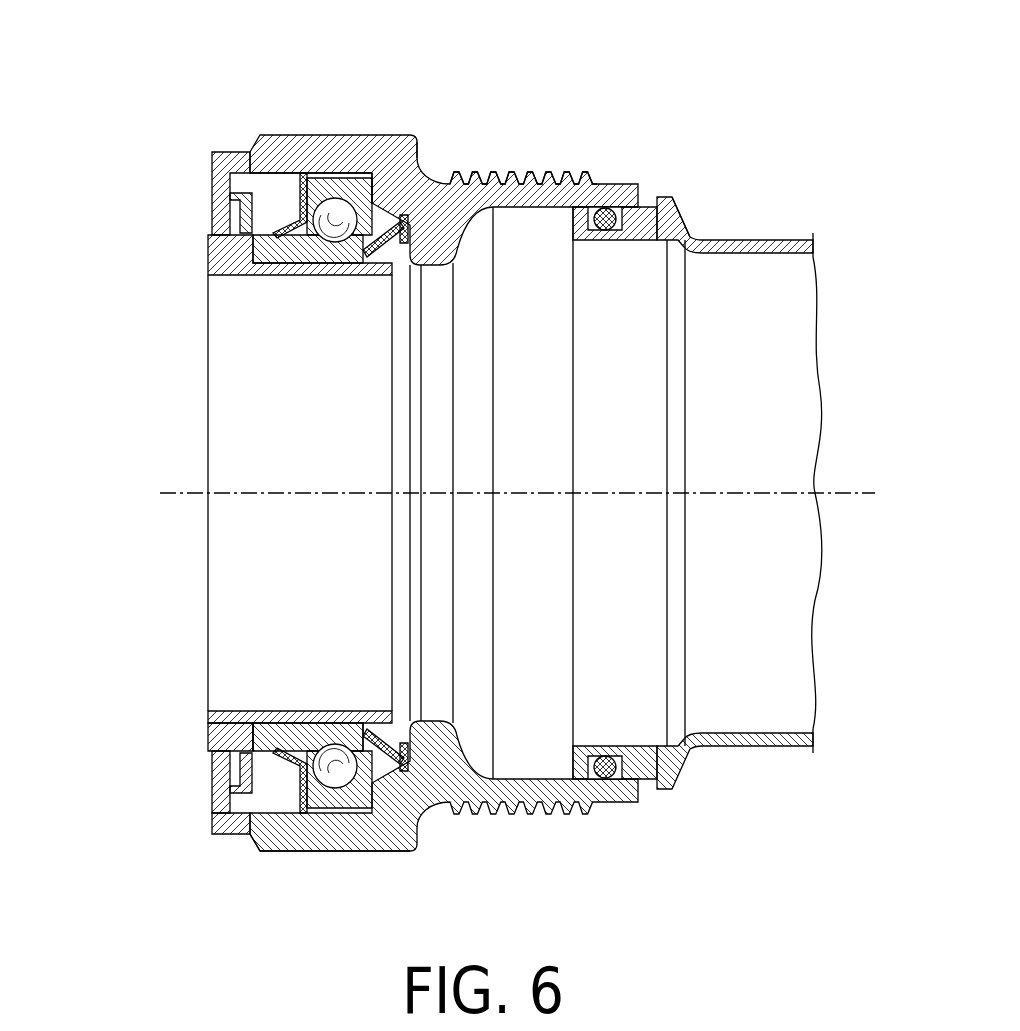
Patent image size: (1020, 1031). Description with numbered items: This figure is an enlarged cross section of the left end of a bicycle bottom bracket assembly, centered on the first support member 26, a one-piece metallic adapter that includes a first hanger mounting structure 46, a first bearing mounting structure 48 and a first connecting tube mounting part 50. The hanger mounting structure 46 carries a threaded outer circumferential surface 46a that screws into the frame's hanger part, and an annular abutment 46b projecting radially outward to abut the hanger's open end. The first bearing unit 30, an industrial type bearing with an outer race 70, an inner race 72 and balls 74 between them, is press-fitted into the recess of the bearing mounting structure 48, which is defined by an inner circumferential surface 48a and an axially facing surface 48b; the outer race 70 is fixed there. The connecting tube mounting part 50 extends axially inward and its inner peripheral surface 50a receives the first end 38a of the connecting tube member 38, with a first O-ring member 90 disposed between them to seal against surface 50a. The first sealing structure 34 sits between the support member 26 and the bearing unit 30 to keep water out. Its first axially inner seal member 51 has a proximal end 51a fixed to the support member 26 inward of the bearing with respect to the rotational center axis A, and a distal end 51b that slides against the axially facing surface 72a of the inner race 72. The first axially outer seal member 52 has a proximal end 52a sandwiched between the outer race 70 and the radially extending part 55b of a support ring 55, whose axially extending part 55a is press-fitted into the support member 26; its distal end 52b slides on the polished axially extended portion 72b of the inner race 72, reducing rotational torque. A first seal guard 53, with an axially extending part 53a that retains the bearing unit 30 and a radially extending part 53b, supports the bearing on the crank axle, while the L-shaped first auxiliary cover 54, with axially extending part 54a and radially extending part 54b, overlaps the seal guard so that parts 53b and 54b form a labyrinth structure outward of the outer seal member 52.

The first support member 26 is at (282, 126).
The first bearing unit 30 is at (343, 168).
The first sealing structure 34 is at (385, 405).
The connecting tube member 38 is at (770, 236).
The first end 38a is at (678, 212).
The first hanger mounting structure 46 is at (496, 164).
The threaded outer circumferential surface 46a is at (520, 176).
The annular abutment 46b is at (430, 152).
The first bearing mounting structure 48 is at (206, 212).
The inner circumferential surface 48a is at (330, 176).
The axially facing surface 48b is at (360, 172).
The first connecting tube mounting part 50 is at (652, 224).
The inner peripheral surface 50a is at (592, 244).
The first axially inner seal member 51 is at (396, 262).
The proximal end 51a is at (415, 767).
The distal end 51b is at (340, 740).
The first axially outer seal member 52 is at (302, 240).
The proximal end 52a is at (290, 808).
The distal end 52b is at (235, 771).
The first seal guard 53 is at (250, 280).
The axially extending part 53a is at (280, 710).
The radially extending part 53b is at (203, 722).
The first auxiliary cover 54 is at (206, 221).
The axially extending part 54a is at (213, 806).
The radially extending part 54b is at (220, 780).
The support ring 55 is at (192, 962).
The axially extending part 55a is at (278, 856).
The radially extending part 55b is at (265, 828).
The outer race 70 is at (342, 806).
The inner race 72 is at (320, 737).
The axially facing surface 72a is at (398, 735).
The axially extended portion 72b is at (240, 740).
The balls 74 is at (328, 775).
The first O-ring member 90 is at (618, 230).
The rotational center axis A is at (712, 490).